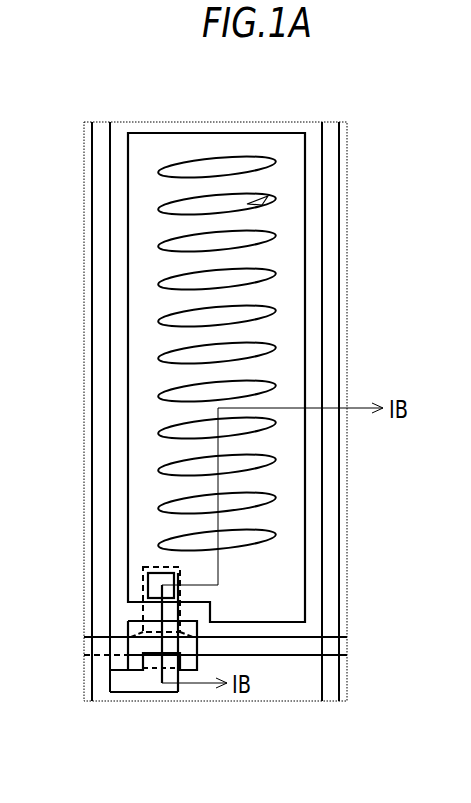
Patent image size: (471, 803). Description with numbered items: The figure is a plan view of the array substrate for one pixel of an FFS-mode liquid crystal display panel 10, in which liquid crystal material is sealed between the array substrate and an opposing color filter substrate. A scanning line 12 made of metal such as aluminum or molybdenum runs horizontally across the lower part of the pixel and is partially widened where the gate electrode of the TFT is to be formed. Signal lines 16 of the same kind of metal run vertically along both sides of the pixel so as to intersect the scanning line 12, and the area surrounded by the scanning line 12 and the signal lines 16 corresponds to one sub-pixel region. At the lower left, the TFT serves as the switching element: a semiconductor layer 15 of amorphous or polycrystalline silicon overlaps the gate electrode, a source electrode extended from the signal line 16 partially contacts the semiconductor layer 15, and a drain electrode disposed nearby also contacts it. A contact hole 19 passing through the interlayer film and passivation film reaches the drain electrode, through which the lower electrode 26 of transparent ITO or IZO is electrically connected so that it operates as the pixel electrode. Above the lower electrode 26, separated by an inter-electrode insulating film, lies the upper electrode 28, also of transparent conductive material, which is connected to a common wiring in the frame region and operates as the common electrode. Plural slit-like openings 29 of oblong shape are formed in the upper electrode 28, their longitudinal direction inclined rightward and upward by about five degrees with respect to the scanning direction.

The liquid crystal display panel 10 is at (80, 70).
The scanning line 12 is at (115, 647).
The semiconductor layer 15 is at (128, 621).
The signal line 16 is at (102, 381).
The contact hole 19 is at (146, 572).
The lower electrode 26 is at (285, 131).
The upper electrode 28 is at (162, 161).
The slit-like opening 29 is at (270, 201).
The element TFT is at (139, 681).